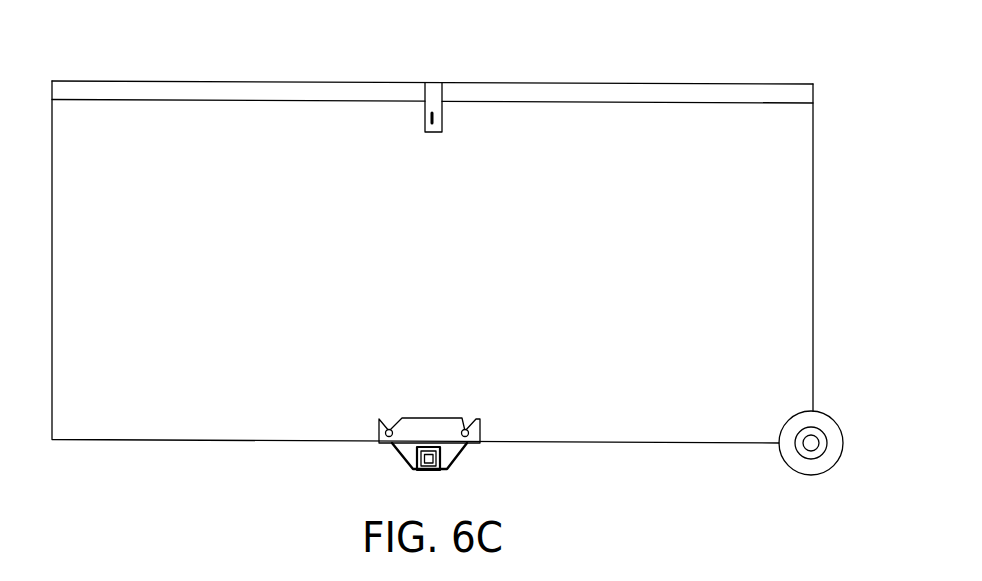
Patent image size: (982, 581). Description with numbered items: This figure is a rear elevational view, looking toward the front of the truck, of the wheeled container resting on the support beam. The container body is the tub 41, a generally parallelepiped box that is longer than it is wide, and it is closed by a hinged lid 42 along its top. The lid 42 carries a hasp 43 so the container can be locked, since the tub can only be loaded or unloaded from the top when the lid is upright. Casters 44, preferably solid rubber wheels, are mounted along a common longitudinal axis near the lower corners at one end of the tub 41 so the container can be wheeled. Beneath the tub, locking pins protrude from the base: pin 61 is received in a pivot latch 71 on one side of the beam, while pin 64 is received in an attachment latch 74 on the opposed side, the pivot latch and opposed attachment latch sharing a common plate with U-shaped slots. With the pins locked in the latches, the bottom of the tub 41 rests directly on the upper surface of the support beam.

The tub 41 is at (725, 338).
The lid 42 is at (110, 80).
The hasp 43 is at (443, 133).
The casters 44 is at (827, 415).
The locking pin 61 is at (548, 388).
The locking pin 64 is at (389, 428).
The pivot latch 71 is at (468, 445).
The attachment latch 74 is at (382, 445).